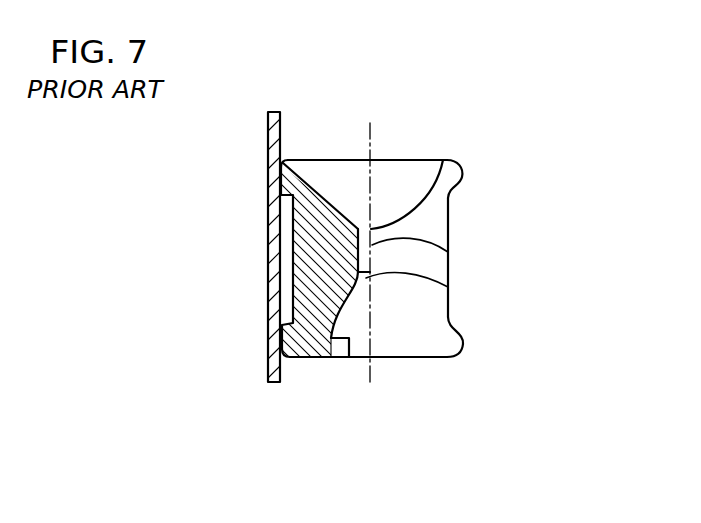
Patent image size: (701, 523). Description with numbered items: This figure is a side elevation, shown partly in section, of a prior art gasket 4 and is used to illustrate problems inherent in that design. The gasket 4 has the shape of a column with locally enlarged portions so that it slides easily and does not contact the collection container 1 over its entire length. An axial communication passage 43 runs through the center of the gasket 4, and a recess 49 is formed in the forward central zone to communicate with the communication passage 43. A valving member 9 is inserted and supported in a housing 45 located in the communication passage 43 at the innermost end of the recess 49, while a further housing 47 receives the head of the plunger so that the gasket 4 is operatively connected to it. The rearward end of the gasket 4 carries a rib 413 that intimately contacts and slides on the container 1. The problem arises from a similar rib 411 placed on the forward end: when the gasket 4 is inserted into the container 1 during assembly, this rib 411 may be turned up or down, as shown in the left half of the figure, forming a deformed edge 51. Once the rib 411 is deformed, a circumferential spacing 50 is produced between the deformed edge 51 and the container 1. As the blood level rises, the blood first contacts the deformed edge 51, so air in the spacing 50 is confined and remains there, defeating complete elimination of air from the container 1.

The collection container 1 is at (268, 262).
The gasket 4 is at (410, 337).
The valving member 9 is at (376, 178).
The communication passage 43 is at (448, 287).
The housing 45 is at (448, 252).
The housing 47 is at (361, 357).
The recess 49 is at (348, 176).
The circumferential spacing 50 is at (268, 144).
The deformed edge 51 is at (289, 158).
The rib 411 is at (283, 177).
The rib 413 is at (283, 345).